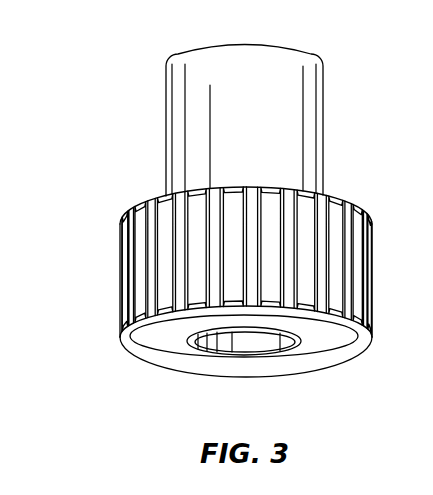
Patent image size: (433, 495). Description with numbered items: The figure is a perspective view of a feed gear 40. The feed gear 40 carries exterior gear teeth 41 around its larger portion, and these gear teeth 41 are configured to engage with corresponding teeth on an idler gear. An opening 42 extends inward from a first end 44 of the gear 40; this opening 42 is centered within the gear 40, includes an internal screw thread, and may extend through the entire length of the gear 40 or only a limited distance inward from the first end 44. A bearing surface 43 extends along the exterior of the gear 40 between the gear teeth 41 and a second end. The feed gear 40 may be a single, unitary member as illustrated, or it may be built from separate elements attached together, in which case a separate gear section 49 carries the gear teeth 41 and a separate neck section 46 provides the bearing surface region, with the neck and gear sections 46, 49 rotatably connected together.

The feed gear 40 is at (98, 155).
The exterior gear teeth 41 is at (162, 278).
The opening 42 is at (227, 333).
The bearing surface 43 is at (242, 107).
The first end 44 is at (323, 347).
The neck section 46 is at (178, 118).
The gear section 49 is at (340, 205).